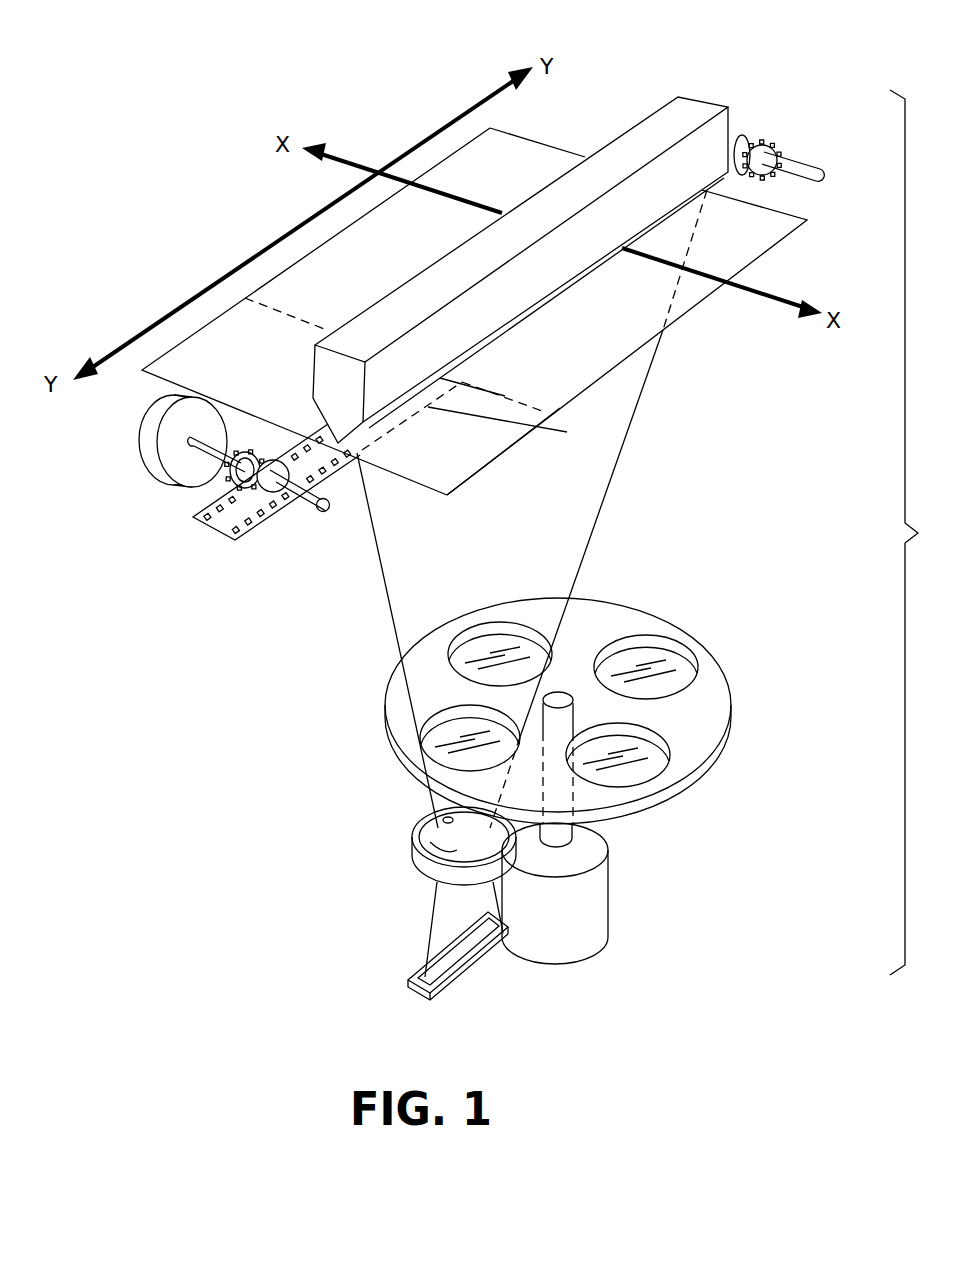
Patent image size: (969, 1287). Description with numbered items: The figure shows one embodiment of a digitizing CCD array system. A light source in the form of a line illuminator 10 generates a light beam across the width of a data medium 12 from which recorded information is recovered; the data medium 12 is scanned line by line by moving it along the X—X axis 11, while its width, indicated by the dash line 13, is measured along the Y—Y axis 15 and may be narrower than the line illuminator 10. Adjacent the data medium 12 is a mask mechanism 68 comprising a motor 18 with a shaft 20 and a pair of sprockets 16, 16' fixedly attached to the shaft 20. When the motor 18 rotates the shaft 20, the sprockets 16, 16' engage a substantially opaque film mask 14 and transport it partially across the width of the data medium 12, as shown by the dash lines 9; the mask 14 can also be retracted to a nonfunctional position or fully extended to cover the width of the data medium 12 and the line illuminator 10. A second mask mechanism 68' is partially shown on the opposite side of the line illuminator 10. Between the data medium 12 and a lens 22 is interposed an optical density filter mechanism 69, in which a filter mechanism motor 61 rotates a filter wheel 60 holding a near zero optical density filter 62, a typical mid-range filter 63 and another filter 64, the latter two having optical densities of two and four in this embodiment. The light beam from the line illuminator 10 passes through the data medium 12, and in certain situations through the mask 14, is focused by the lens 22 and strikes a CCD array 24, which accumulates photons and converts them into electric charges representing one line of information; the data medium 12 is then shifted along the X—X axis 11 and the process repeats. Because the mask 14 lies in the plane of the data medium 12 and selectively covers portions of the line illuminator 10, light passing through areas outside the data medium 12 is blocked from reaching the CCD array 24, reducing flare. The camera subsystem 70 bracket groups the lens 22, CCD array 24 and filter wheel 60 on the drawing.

The dash lines 9 is at (507, 426).
The line illuminator 10 is at (660, 124).
The X—X axis 11 is at (768, 290).
The data medium 12 is at (490, 463).
The dash line 13 is at (505, 396).
The film mask 14 is at (228, 518).
The Y—Y axis 15 is at (250, 255).
The sprocket 16 is at (262, 533).
The sprocket 16' is at (190, 500).
The motor 18 is at (150, 463).
The shaft 20 is at (320, 512).
The lens 22 is at (423, 867).
The CCD array 24 is at (457, 972).
The filter wheel 60 is at (402, 717).
The filter mechanism motor 61 is at (598, 922).
The near zero optical density filter 62 is at (440, 743).
The mid-range filter 63 is at (628, 765).
The filter 64 is at (637, 650).
The mask mechanism 68 is at (213, 550).
The second mask mechanism 68' is at (779, 116).
The optical density filter mechanism 69 is at (428, 784).
The camera subsystem 70 is at (612, 817).